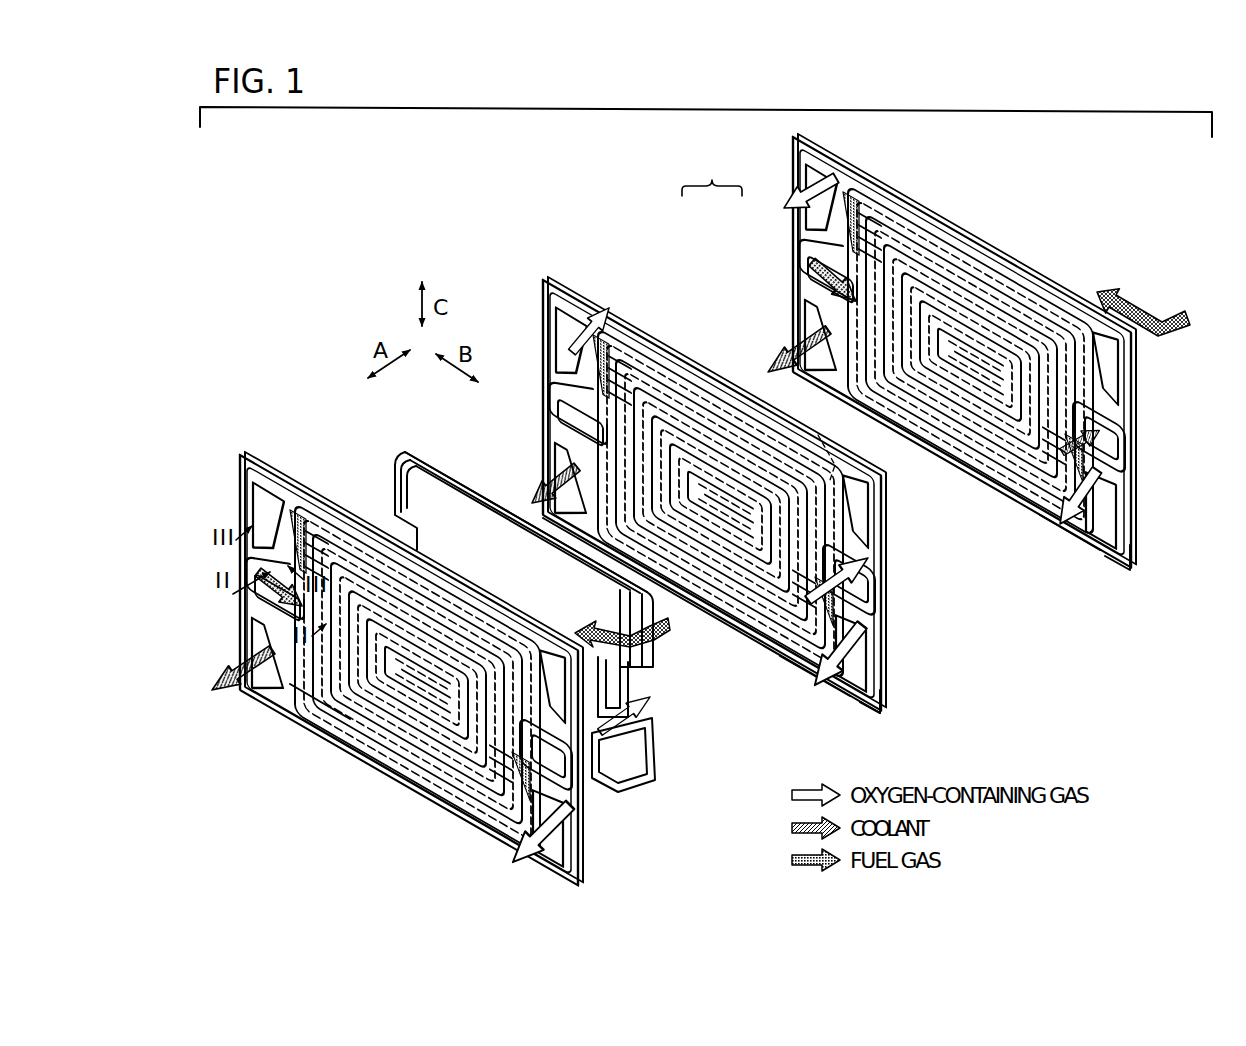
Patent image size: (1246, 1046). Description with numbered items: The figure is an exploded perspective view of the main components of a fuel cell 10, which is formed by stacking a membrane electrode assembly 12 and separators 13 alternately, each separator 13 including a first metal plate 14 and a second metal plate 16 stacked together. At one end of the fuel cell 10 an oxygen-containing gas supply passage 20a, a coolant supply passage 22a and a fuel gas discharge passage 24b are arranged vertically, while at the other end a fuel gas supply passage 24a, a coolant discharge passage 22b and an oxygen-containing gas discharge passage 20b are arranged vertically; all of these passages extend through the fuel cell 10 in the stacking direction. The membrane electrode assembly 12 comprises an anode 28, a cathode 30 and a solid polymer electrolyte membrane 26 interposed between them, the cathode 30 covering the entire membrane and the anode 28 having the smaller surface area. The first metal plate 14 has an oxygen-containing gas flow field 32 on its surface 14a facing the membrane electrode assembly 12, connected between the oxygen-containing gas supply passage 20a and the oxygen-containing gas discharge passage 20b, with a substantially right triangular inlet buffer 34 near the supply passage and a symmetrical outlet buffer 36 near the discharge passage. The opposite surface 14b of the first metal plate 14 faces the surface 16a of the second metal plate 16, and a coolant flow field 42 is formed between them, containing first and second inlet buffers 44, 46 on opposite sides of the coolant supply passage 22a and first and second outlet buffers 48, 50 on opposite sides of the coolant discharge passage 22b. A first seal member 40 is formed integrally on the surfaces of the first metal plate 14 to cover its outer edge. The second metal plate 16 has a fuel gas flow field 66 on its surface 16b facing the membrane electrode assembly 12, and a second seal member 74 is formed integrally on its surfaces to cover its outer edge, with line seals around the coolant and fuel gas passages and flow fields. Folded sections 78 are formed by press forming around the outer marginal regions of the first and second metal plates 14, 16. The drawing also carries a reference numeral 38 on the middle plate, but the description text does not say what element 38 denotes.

The fuel cell 10 is at (230, 263).
The membrane electrode assembly 12 is at (405, 447).
The separator 13 is at (712, 175).
The first metal plate 14 is at (641, 328).
The surface of the first metal plate 14a is at (815, 683).
The surface of the first metal plate 14b is at (874, 716).
The second metal plate 16 is at (242, 452).
The surface of the second metal plate 16a is at (320, 708).
The surface of the second metal plate 16b is at (1100, 571).
The oxygen-containing gas supply passage 20a is at (250, 507).
The oxygen-containing gas discharge passage 20b is at (565, 850).
The coolant supply passage 22a is at (558, 412).
The coolant discharge passage 22b is at (552, 752).
The fuel gas supply passage 24a is at (548, 650).
The fuel gas discharge passage 24b is at (252, 641).
The solid polymer electrolyte membrane 26 is at (407, 462).
The anode 28 is at (405, 493).
The cathode 30 is at (443, 460).
The oxygen-containing gas flow field 32 is at (684, 390).
The inlet buffer 34 is at (583, 312).
The outlet buffer 36 is at (822, 648).
The fuel gas flow field 38 is at (778, 440).
The first seal member 40 is at (736, 643).
The coolant flow field 42 is at (370, 733).
The first inlet buffer 44 is at (577, 551).
The second inlet buffer 46 is at (840, 185).
The first outlet buffer 48 is at (1050, 512).
The second outlet buffer 50 is at (834, 452).
The fuel gas flow field 66 is at (400, 768).
The second seal member 74 is at (1040, 278).
The folded sections 78 is at (302, 486).